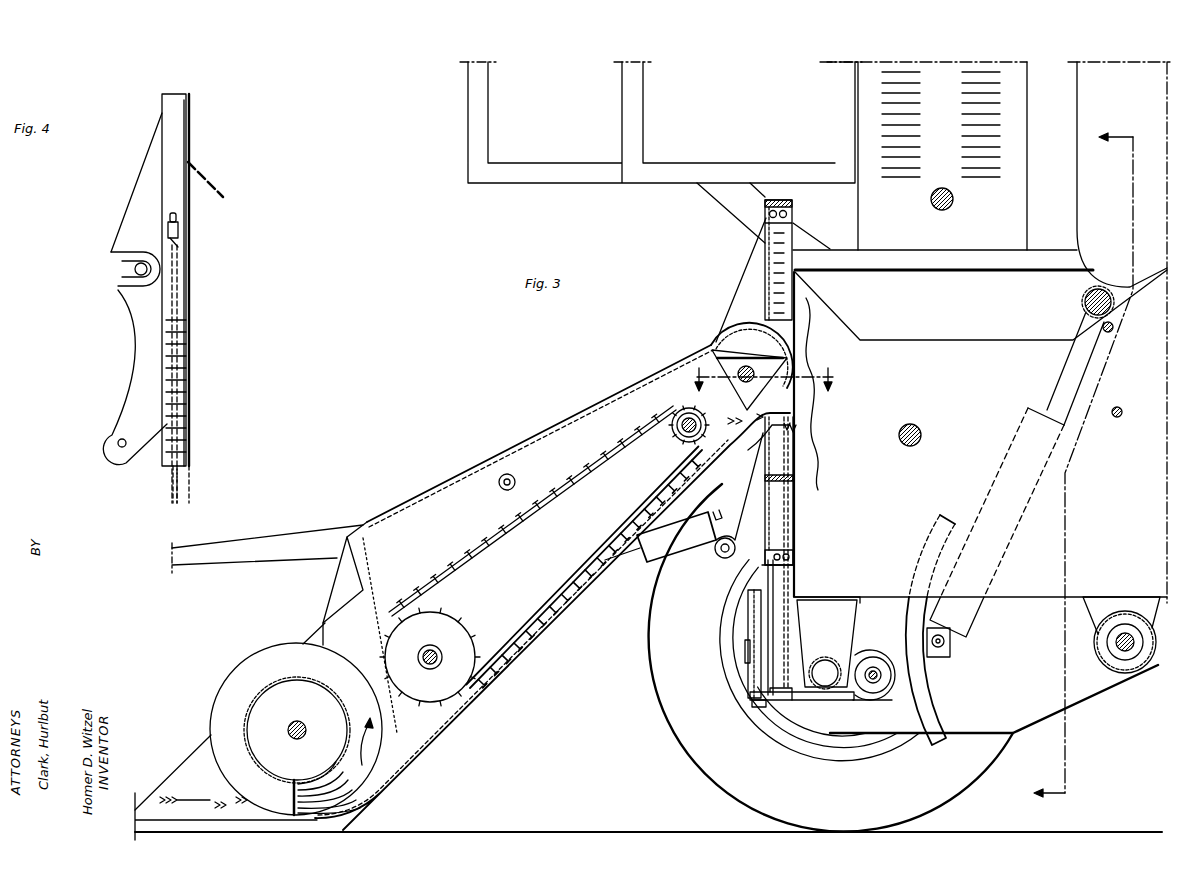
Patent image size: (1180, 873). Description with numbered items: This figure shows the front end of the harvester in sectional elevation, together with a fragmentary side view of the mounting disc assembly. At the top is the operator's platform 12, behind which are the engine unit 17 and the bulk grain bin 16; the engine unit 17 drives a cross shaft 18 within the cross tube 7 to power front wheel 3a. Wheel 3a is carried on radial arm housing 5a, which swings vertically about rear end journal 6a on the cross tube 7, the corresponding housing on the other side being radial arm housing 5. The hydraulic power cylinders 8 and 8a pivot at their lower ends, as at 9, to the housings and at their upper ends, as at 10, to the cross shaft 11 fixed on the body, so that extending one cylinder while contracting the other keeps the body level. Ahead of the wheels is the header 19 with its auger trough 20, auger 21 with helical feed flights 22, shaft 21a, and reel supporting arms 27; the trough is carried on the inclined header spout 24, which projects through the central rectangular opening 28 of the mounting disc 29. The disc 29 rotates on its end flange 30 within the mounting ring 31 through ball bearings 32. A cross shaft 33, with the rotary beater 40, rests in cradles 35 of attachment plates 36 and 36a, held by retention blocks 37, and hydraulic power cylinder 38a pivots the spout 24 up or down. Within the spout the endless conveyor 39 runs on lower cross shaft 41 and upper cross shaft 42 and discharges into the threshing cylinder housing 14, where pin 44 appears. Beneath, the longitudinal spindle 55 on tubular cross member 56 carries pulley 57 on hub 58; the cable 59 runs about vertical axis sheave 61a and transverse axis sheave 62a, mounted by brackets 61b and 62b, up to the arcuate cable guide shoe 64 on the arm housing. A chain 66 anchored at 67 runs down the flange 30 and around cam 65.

In FIG. 3, the front wheel 3a is at (662, 677).
In FIG. 3, the radial arm housing 5 is at (1083, 468).
In FIG. 3, the radial arm housing 5a is at (1020, 702).
In FIG. 3, the rear end journal 6a is at (1122, 674).
In FIG. 3, the cross tube 7 is at (1110, 612).
In FIG. 3, the hydraulic power cylinder 8 is at (762, 379).
In FIG. 3, the hydraulic power cylinder 8a is at (974, 607).
In FIG. 3, the lower pivotal connection 9 is at (946, 643).
In FIG. 3, the upper pivotal connection 10 is at (1085, 300).
In FIG. 3, the cross shaft 11 is at (1102, 323).
In FIG. 3, the operator's platform 12 is at (534, 168).
In FIG. 4, the threshing cylinder housing 14 is at (202, 193).
In FIG. 3, the threshing cylinder housing 14 is at (893, 340).
In FIG. 3, the bulk grain bin 16 is at (1093, 178).
In FIG. 3, the engine unit 17 is at (1030, 161).
In FIG. 3, the cross shaft 18 is at (1114, 648).
In FIG. 3, the header 19 is at (303, 622).
In FIG. 3, the auger trough 20 is at (190, 770).
In FIG. 3, the auger 21 is at (265, 692).
In FIG. 3, the roller shaft 21a is at (310, 714).
In FIG. 3, the helical feed flights 22 is at (268, 660).
In FIG. 3, the header spout 24 is at (420, 497).
In FIG. 3, the reel supporting arms 27 is at (264, 543).
In FIG. 3, the central rectangular opening 28 is at (757, 432).
In FIG. 3, the mounting disc 29 is at (765, 265).
In FIG. 4, the end flange 30 is at (176, 136).
In FIG. 3, the end flange 30 is at (778, 200).
In FIG. 4, the mounting ring 31 is at (191, 280).
In FIG. 3, the mounting ring 31 is at (782, 547).
In FIG. 3, the ball bearings 32 is at (765, 214).
In FIG. 3, the cross shaft 33 is at (766, 357).
In FIG. 4, the cradle 35 is at (119, 287).
In FIG. 4, the attachment plate 36 is at (140, 326).
In FIG. 3, the attachment plate 36a is at (738, 304).
In FIG. 4, the retention block 37 is at (119, 265).
In FIG. 3, the hydraulic power cylinder 38a is at (668, 549).
In FIG. 3, the endless conveyor 39 is at (498, 645).
In FIG. 3, the rotary beater 40 is at (731, 338).
In FIG. 3, the lower cross shaft 41 is at (434, 652).
In FIG. 3, the upper cross shaft 42 is at (679, 432).
In FIG. 3, the pivot pin 44 is at (913, 425).
In FIG. 3, the longitudinal spindle 55 is at (819, 656).
In FIG. 3, the tubular cross member 56 is at (849, 650).
In FIG. 3, the pulley 57 is at (750, 686).
In FIG. 3, the hub 58 is at (796, 645).
In FIG. 3, the cable 59 is at (812, 701).
In FIG. 3, the vertical axis sheave 61a is at (768, 702).
In FIG. 3, the bracket 61b is at (778, 702).
In FIG. 3, the transverse axis sheave 62a is at (875, 702).
In FIG. 3, the bracket 62b is at (862, 692).
In FIG. 3, the arcuate cable guide shoe 64 is at (915, 694).
In FIG. 3, the cam 65 is at (793, 606).
In FIG. 4, the chain 66 is at (176, 366).
In FIG. 3, the chain 66 is at (792, 590).
In FIG. 4, the chain anchor 67 is at (180, 226).